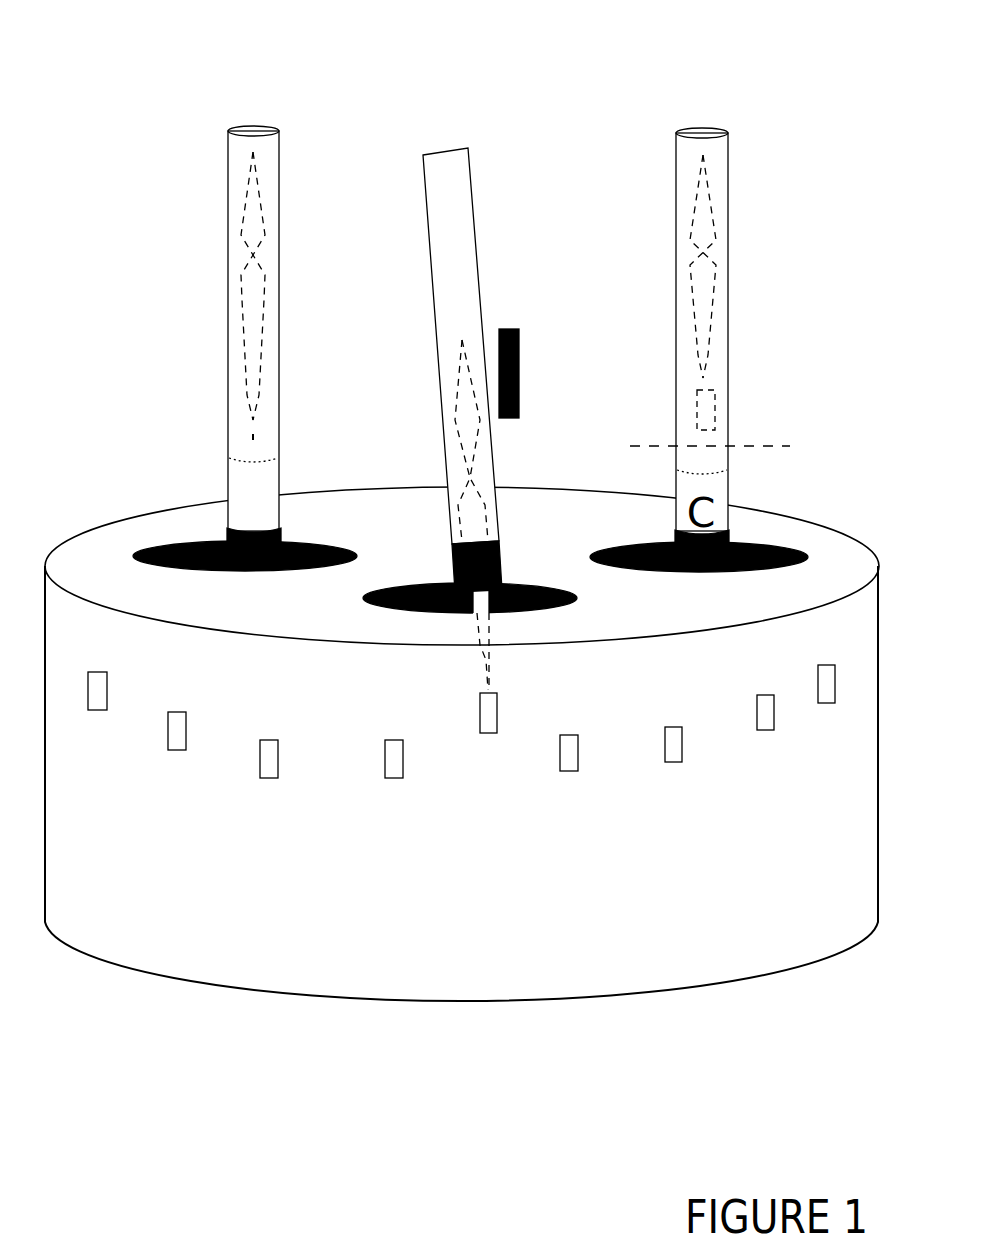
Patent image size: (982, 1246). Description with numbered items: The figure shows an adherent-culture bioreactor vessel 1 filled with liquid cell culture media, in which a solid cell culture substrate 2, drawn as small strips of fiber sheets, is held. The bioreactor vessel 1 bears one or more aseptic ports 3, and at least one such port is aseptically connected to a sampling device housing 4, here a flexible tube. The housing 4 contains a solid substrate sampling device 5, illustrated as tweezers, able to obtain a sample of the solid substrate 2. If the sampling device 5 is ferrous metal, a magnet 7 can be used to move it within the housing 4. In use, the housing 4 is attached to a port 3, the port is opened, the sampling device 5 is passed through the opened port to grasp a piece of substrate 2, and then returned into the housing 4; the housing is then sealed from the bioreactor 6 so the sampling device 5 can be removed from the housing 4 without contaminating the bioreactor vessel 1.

The adherent-culture bioreactor vessel 1 is at (462, 744).
The solid cell culture substrate 2 is at (400, 795).
The aseptic port 3 is at (513, 517).
The sampling device housing 4 is at (279, 110).
The solid substrate sampling device 5 is at (227, 266).
The seal from the bioreactor 6 is at (797, 446).
The magnet 7 is at (526, 363).